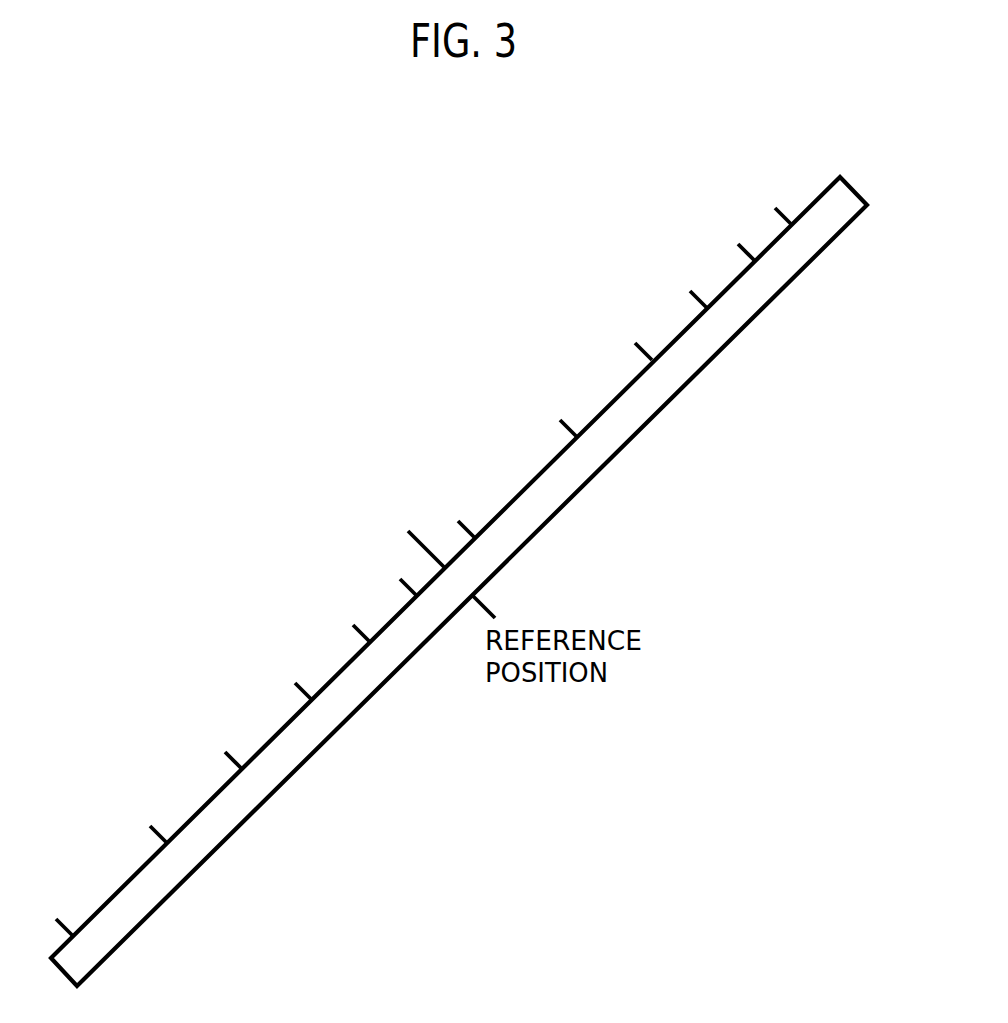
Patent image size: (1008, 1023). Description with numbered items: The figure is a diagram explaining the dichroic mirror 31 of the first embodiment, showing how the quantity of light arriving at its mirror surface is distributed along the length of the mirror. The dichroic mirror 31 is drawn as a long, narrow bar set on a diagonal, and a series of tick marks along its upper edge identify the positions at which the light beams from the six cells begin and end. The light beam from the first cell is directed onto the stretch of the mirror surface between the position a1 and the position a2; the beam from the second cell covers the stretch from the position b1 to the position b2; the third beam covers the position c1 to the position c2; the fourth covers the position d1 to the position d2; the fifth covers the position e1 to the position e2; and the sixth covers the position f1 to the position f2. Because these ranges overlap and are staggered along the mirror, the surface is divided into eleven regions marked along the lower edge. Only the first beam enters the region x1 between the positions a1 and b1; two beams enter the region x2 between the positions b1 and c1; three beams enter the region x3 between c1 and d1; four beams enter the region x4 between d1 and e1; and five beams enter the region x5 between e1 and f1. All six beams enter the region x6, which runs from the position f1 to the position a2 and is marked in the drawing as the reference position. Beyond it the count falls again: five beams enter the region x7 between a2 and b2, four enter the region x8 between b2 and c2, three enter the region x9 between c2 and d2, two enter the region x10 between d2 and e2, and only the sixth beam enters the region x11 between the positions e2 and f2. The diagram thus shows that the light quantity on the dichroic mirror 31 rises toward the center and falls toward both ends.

The dichroic mirror 31 is at (845, 200).
The position a1 is at (772, 202).
The position b1 is at (735, 240).
The position c1 is at (686, 285).
The position d1 is at (631, 336).
The position e1 is at (555, 414).
The position f1 is at (459, 509).
The position a2 is at (398, 570).
The position b2 is at (350, 618).
The position c2 is at (290, 677).
The position d2 is at (221, 745).
The position e2 is at (146, 819).
The position f2 is at (55, 909).
The region x1 is at (820, 283).
The region x2 is at (778, 325).
The region x3 is at (730, 375).
The region x4 is at (665, 438).
The region x5 is at (590, 510).
The region x6 is at (494, 598).
The region x7 is at (438, 656).
The region x8 is at (381, 713).
The region x9 is at (325, 775).
The region x10 is at (252, 843).
The region x11 is at (167, 928).